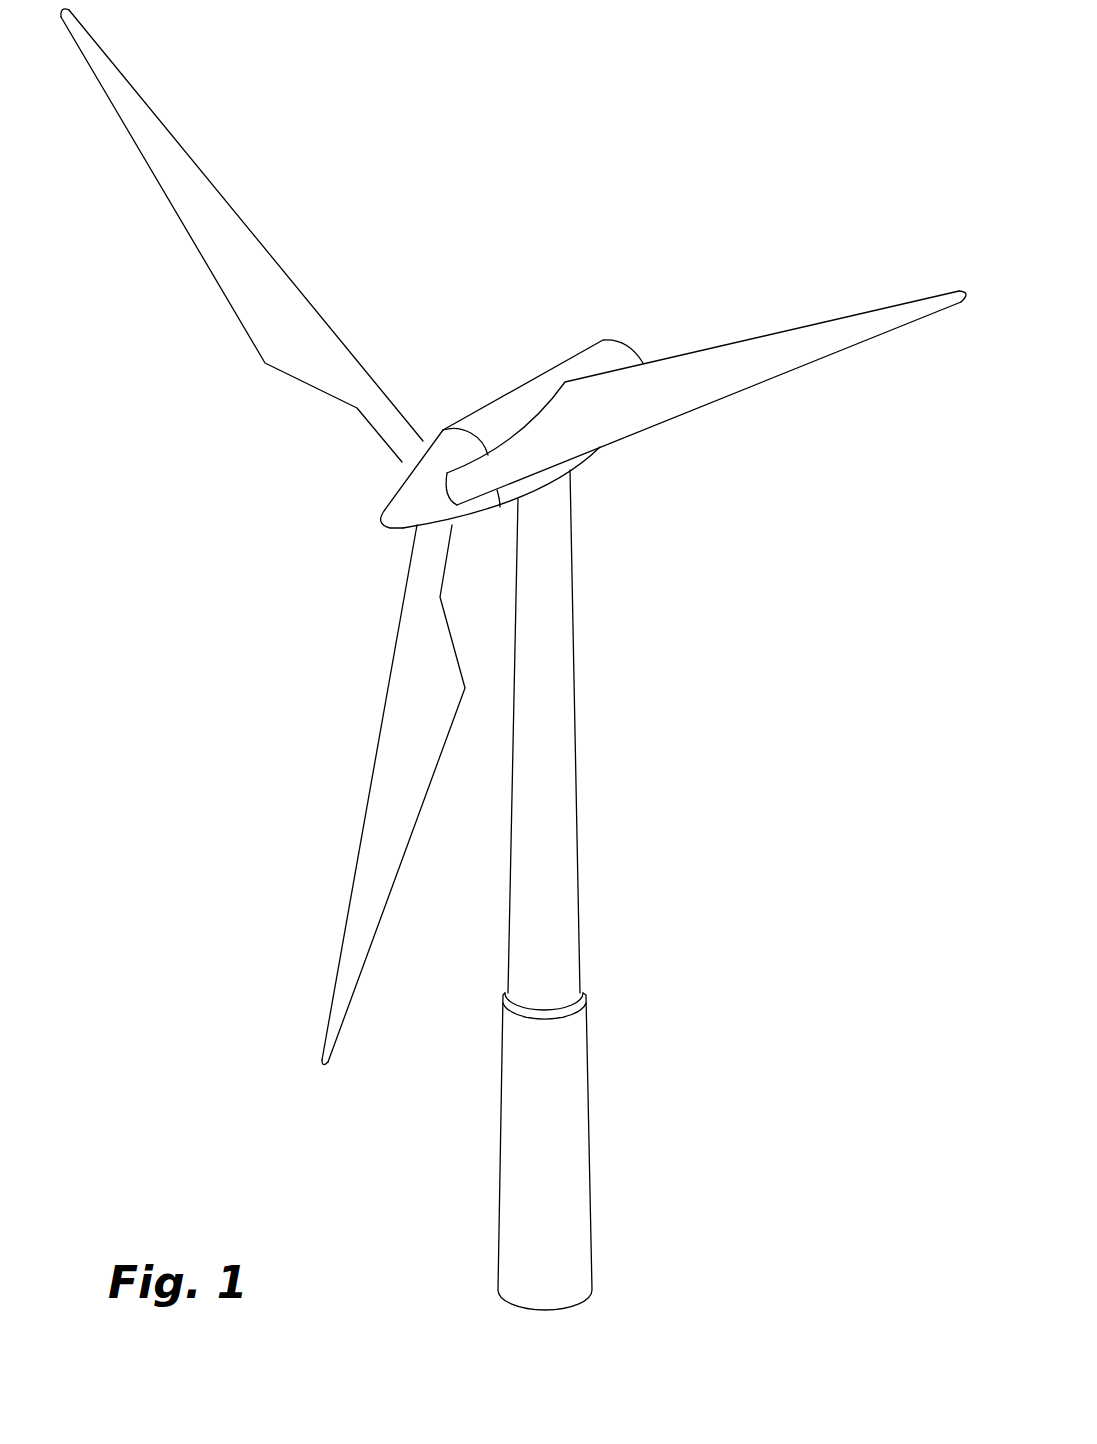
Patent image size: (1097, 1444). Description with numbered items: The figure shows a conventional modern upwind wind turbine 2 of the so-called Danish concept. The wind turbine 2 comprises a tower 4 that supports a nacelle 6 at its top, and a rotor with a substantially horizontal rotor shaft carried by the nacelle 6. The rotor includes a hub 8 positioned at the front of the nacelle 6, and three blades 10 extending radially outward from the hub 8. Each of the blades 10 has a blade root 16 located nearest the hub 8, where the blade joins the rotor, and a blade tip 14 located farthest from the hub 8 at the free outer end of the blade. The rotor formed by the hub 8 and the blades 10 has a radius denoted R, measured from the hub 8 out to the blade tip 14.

The wind turbine 2 is at (680, 820).
The tower 4 is at (563, 735).
The nacelle 6 is at (503, 408).
The hub 8 is at (402, 502).
The blades 10 is at (281, 336).
The blade tip 14 is at (108, 72).
The blade root 16 is at (410, 452).